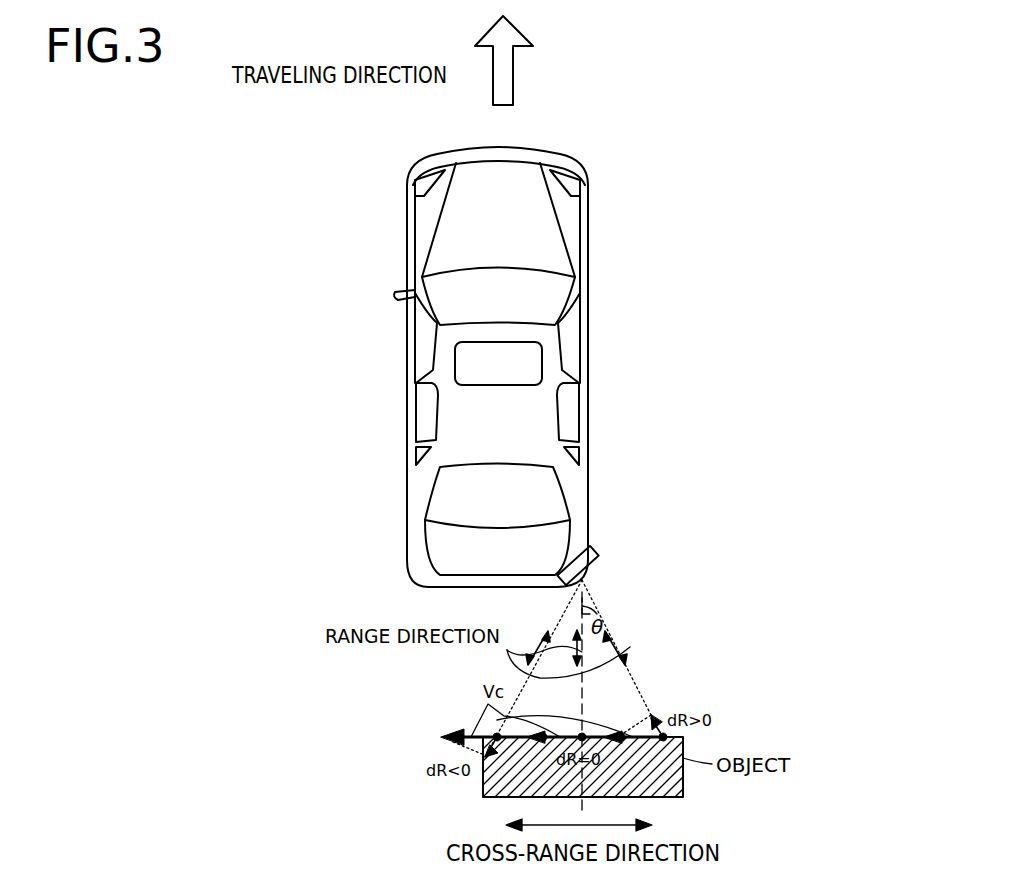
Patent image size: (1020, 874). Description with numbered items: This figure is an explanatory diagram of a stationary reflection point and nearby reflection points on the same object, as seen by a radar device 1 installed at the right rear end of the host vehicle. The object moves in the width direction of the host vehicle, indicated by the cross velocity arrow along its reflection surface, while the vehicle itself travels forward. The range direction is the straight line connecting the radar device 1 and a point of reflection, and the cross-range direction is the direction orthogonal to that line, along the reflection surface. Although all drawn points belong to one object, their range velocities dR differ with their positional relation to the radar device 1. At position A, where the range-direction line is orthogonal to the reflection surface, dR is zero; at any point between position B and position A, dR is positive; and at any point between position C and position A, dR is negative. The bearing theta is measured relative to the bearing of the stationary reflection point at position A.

The radar device 1 is at (597, 551).
The position A is at (587, 737).
The position B is at (665, 738).
The position C is at (497, 737).